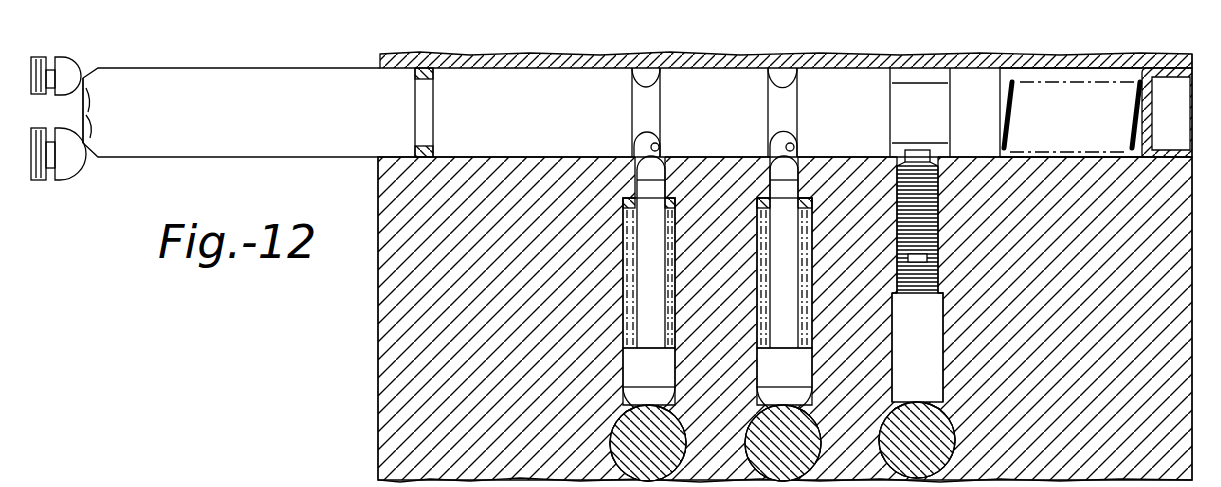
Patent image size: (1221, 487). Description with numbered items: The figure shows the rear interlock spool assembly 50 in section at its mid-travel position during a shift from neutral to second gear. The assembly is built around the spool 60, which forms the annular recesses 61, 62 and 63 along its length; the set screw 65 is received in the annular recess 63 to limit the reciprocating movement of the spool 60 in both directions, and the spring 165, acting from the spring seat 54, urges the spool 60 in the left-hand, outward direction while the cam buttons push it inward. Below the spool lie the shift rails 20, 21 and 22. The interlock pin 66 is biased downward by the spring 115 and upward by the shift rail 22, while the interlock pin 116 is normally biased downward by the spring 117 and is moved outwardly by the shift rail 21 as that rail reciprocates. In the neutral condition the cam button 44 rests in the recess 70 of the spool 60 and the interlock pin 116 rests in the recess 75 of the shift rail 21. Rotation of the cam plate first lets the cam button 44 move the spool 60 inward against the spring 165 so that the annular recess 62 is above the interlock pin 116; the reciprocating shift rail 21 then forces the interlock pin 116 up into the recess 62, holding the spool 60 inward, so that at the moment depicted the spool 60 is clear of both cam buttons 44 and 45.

The shift rail 20 is at (947, 437).
The shift rail 21 is at (812, 432).
The shift rail 22 is at (680, 438).
The cam button 44 is at (75, 72).
The cam button 45 is at (73, 173).
The rear interlock spool assembly 50 is at (360, 161).
The spring seat 54 is at (1160, 158).
The spool 60 is at (508, 147).
The annular recess 61 is at (652, 138).
The annular recess 62 is at (785, 138).
The annular recess 63 is at (937, 145).
The set screw 65 is at (940, 218).
The interlock pin 66 is at (633, 178).
The recess 70 is at (83, 112).
The recess 75 is at (805, 418).
The spring 115 is at (675, 280).
The interlock pin 116 is at (797, 190).
The spring 117 is at (812, 276).
The spring 165 is at (1012, 145).